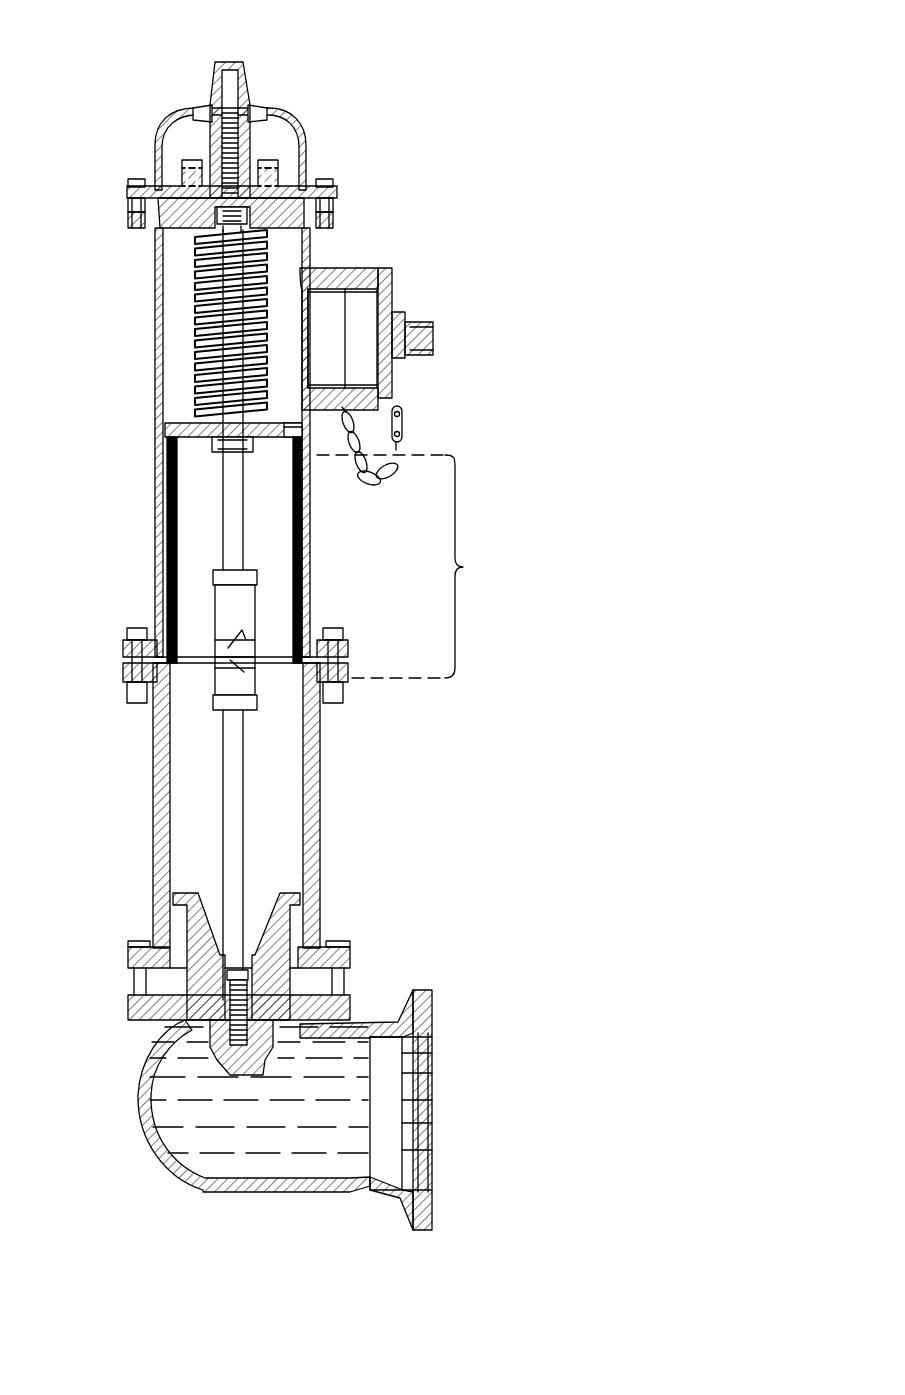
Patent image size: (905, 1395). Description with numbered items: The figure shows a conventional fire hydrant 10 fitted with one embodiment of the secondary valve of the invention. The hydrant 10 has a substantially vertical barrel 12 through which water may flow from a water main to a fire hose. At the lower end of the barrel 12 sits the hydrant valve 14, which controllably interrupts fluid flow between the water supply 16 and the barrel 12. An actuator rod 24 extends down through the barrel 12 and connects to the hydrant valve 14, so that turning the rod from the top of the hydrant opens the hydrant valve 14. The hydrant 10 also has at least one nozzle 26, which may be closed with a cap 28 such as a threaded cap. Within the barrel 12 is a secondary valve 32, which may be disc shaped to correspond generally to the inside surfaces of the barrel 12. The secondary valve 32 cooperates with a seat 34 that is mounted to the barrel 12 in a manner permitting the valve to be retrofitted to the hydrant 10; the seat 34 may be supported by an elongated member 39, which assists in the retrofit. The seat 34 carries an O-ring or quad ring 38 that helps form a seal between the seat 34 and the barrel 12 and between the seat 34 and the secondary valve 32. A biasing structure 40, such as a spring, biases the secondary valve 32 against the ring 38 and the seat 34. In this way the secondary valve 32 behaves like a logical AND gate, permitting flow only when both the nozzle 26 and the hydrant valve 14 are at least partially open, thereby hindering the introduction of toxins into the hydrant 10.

The fire hydrant 10 is at (442, 93).
The barrel 12 is at (157, 577).
The hydrant valve 14 is at (280, 930).
The water supply 16 is at (547, 1023).
The actuator rod 24 is at (238, 823).
The nozzle 26 is at (368, 267).
The cap 28 is at (432, 332).
The secondary valve 32 is at (290, 422).
The seat 34 is at (168, 445).
The O-ring or quad ring 38 is at (167, 435).
The elongated member 39 is at (413, 542).
The biasing structure 40 is at (207, 352).